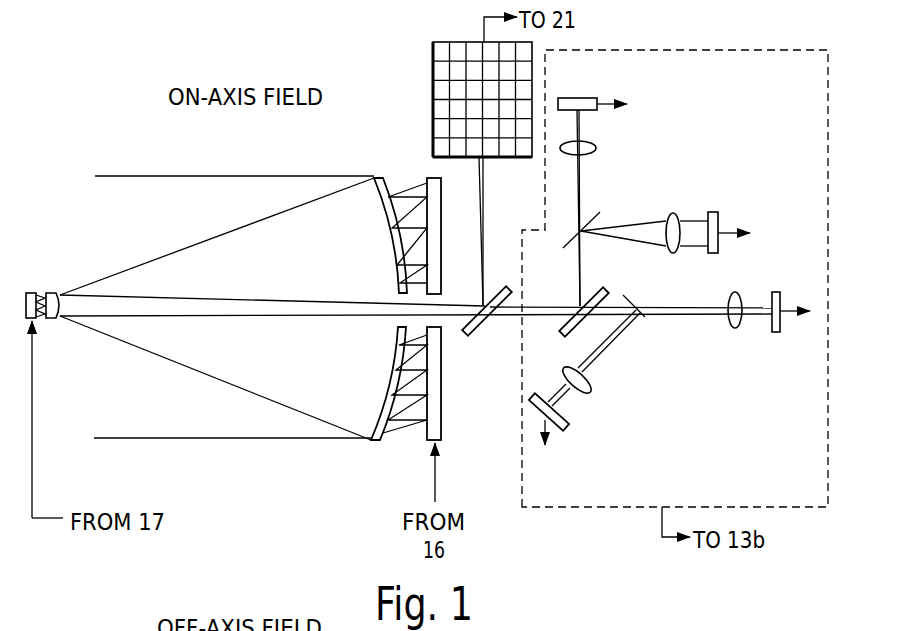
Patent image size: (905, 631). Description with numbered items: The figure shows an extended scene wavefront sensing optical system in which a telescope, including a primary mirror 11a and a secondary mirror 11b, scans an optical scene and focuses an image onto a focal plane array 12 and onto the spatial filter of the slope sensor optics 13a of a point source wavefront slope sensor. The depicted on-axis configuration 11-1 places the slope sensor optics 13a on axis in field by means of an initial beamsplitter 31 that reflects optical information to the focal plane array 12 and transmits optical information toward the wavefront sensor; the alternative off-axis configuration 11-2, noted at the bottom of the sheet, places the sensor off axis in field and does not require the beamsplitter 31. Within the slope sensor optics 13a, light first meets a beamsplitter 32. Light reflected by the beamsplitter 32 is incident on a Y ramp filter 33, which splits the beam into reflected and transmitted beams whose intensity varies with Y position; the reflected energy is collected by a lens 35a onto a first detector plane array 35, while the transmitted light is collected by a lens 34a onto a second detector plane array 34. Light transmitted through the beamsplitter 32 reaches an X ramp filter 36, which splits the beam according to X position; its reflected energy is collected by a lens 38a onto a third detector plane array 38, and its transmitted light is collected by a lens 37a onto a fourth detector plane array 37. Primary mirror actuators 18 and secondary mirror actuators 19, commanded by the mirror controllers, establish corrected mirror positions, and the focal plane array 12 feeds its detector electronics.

The on-axis configuration 11-1 is at (140, 127).
The off-axis configuration 11-2 is at (92, 624).
The primary mirror 11a is at (378, 172).
The secondary mirror 11b is at (50, 292).
The focal plane array 12 is at (433, 85).
The slope sensor optics 13a is at (547, 508).
The primary mirror actuators 18 is at (395, 456).
The secondary mirror actuators 19 is at (48, 338).
The initial beamsplitter 31 is at (465, 333).
The beamsplitter 32 is at (600, 292).
The Y ramp filter 33 is at (583, 230).
The second detector plane array 34 is at (597, 100).
The lens 34a is at (596, 146).
The first detector plane array 35 is at (713, 211).
The lens 35a is at (672, 213).
The X ramp filter 36 is at (643, 316).
The fourth detector plane array 37 is at (773, 334).
The lens 37a is at (739, 298).
The third detector plane array 38 is at (566, 427).
The lens 38a is at (593, 389).